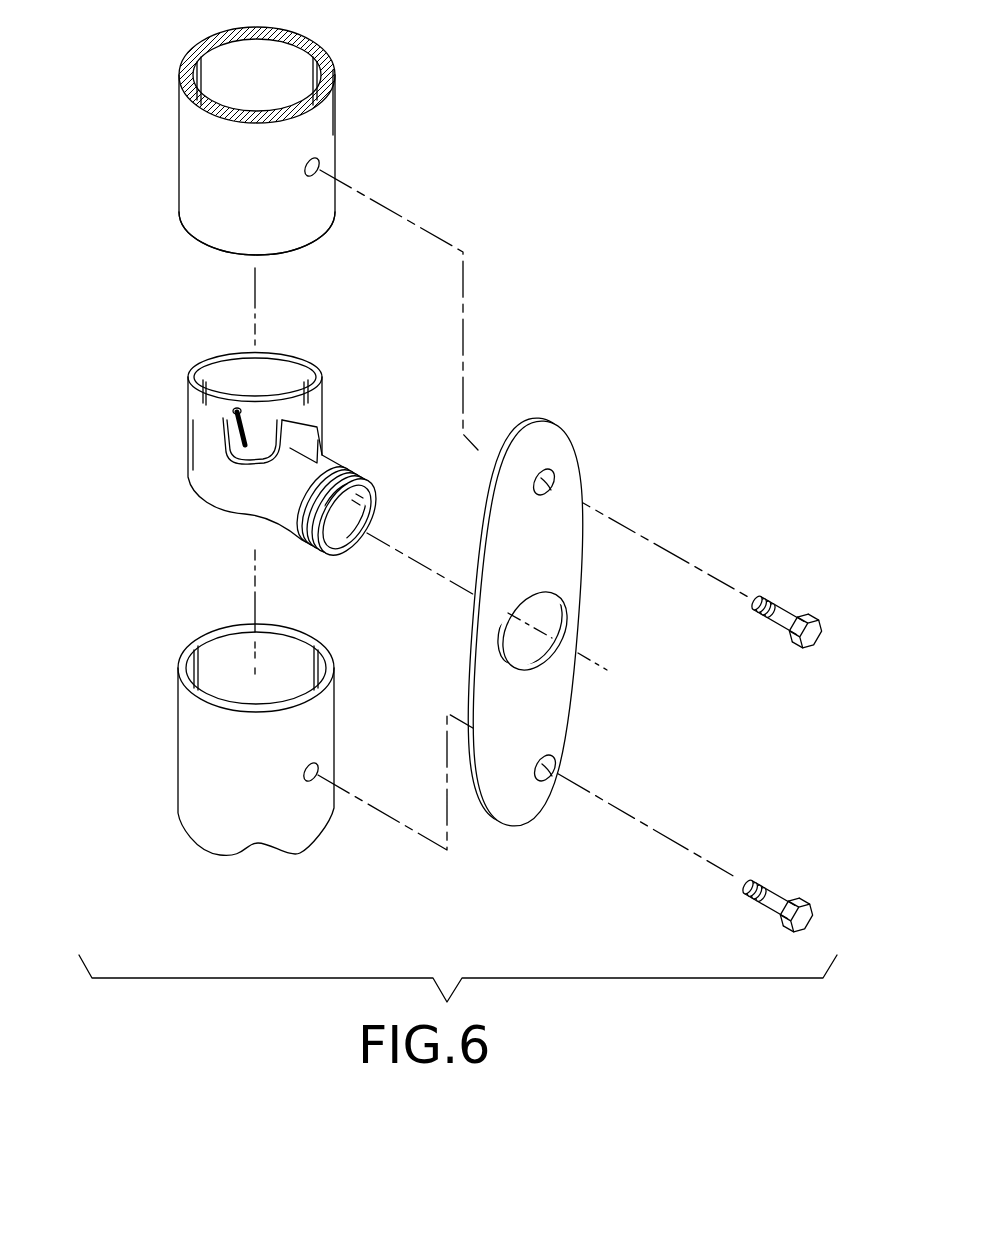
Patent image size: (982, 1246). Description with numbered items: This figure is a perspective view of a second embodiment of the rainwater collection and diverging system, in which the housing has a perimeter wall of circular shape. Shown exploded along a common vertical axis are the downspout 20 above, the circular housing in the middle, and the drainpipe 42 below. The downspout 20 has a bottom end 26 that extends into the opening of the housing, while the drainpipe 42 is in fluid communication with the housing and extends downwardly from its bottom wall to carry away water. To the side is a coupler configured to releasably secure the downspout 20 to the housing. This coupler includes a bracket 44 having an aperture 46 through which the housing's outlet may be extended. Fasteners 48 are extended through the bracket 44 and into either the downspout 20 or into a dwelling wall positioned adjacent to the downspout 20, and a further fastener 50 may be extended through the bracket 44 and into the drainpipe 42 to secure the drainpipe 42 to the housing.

The downspout 20 is at (334, 116).
The bottom end 26 is at (205, 242).
The drainpipe 42 is at (186, 768).
The bracket 44 is at (570, 466).
The aperture 46 is at (560, 622).
The fasteners 48 is at (790, 610).
The fastener 50 is at (790, 897).